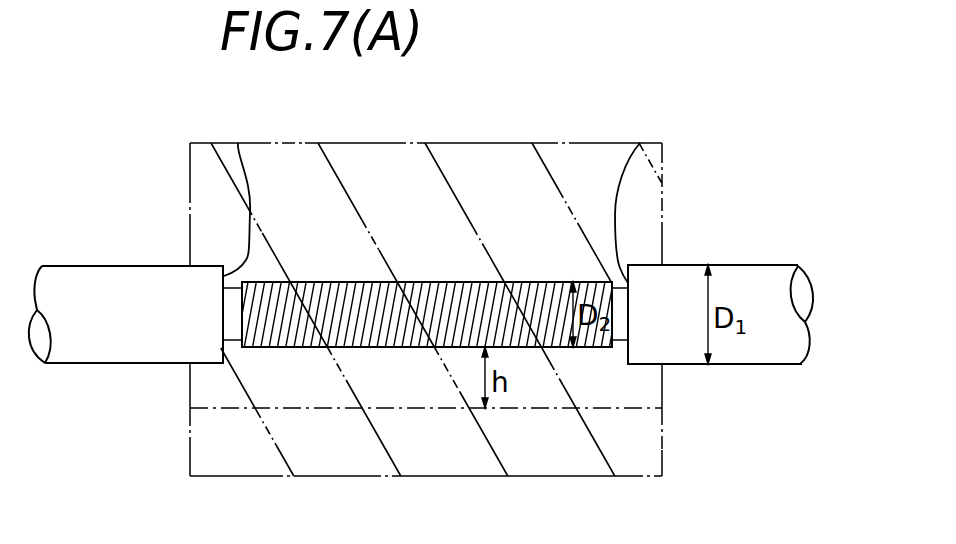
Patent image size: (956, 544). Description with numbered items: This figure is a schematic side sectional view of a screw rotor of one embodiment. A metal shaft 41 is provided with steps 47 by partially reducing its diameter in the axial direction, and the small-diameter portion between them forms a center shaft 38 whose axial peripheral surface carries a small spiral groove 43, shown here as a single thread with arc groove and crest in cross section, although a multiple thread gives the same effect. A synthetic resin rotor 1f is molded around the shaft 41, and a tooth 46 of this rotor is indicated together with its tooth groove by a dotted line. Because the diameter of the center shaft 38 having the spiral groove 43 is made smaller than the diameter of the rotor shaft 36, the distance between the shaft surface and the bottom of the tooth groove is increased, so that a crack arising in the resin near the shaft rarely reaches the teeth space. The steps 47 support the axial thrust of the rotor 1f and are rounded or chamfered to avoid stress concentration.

The synthetic resin rotor 1f is at (482, 141).
The rotor shaft 36 is at (135, 265).
The center shaft 38 is at (412, 282).
The shaft 41 is at (692, 244).
The spiral groove 43 is at (364, 338).
The tooth 46 is at (560, 190).
The step 47 is at (238, 143).